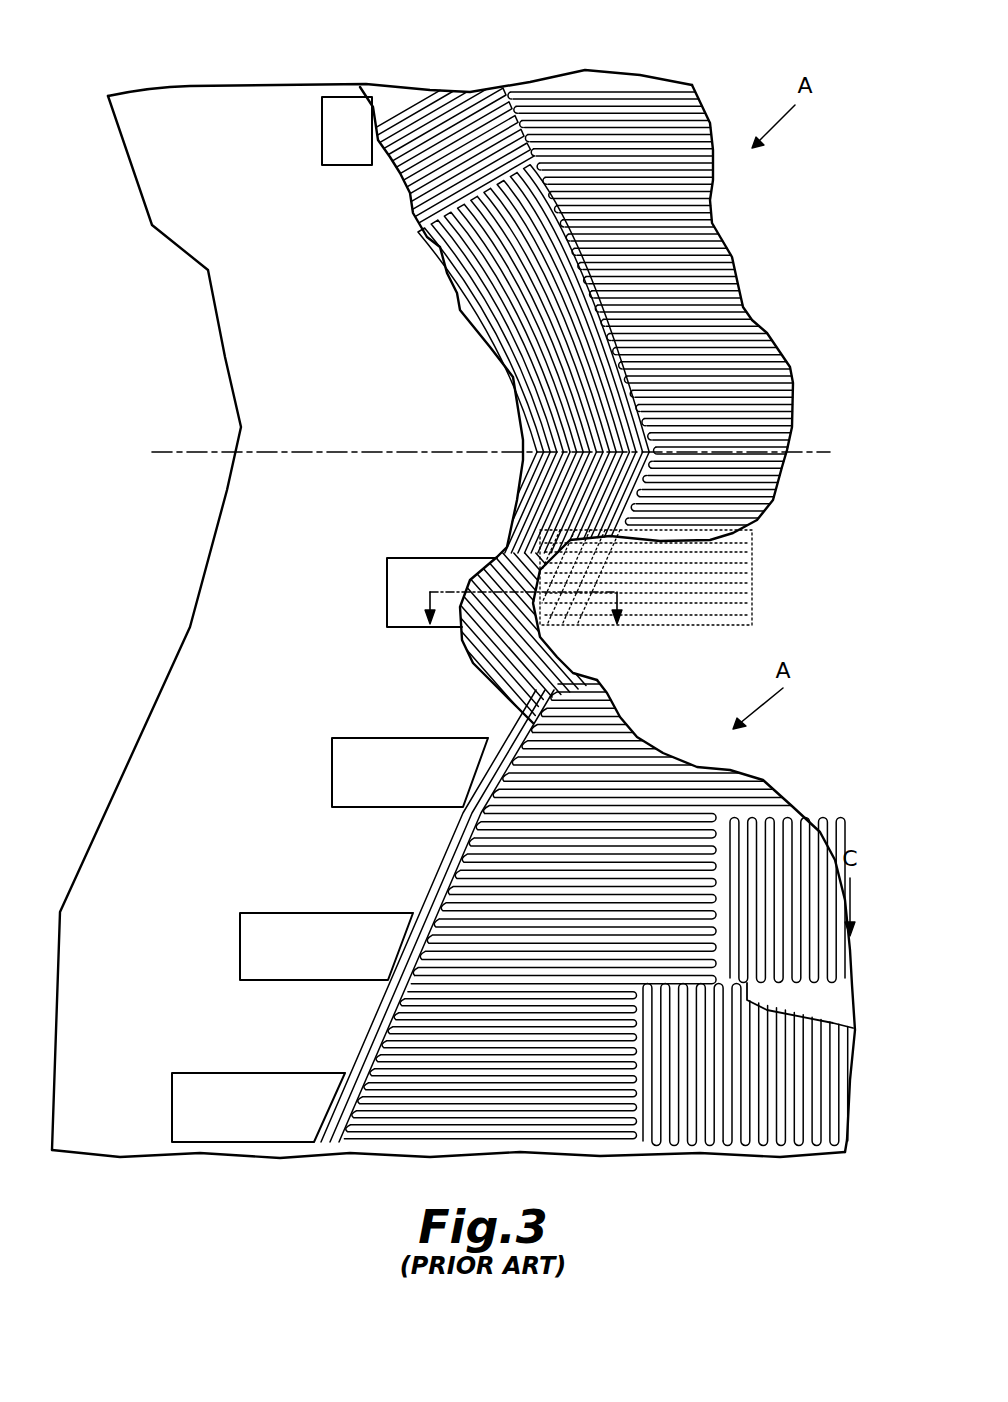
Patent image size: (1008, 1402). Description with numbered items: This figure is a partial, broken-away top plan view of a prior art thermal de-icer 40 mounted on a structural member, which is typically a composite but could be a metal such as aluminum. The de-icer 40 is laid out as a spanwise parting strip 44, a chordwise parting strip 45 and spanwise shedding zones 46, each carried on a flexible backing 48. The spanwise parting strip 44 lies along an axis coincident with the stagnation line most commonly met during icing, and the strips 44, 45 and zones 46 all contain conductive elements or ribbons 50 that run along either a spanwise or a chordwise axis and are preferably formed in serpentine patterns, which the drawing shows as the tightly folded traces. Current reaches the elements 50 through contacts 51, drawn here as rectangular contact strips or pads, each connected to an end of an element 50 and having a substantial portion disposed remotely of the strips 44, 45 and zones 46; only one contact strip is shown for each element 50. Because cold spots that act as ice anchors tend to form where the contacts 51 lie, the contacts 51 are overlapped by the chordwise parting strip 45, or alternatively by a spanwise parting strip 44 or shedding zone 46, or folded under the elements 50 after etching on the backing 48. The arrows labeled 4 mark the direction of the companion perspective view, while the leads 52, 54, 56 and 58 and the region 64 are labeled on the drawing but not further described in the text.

The de-icer 40 is at (243, 1186).
The spanwise parting strip 44 is at (869, 292).
The chordwise parting strip 45 is at (340, 72).
The spanwise shedding zone 46 is at (869, 85).
The backing 48 is at (268, 382).
The conductive element 50 is at (625, 76).
The contact 51 is at (360, 165).
The conductor segment 52 is at (722, 1148).
The conductor segment 54 is at (768, 1150).
The conductor segment 56 is at (850, 1150).
The serpentine conductive trace 58 is at (737, 232).
The edge region 64 is at (843, 748).
The section line 4- 4 is at (520, 595).